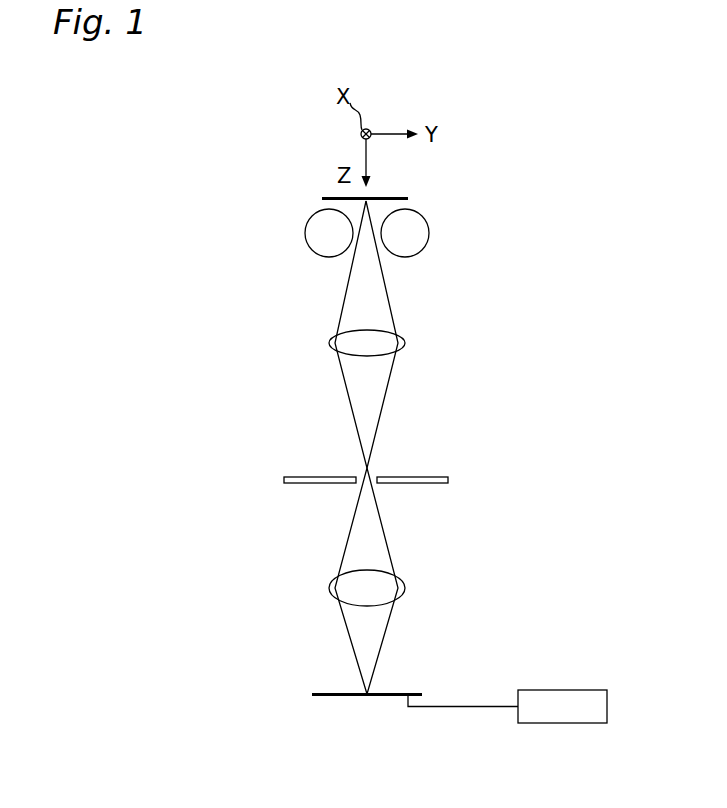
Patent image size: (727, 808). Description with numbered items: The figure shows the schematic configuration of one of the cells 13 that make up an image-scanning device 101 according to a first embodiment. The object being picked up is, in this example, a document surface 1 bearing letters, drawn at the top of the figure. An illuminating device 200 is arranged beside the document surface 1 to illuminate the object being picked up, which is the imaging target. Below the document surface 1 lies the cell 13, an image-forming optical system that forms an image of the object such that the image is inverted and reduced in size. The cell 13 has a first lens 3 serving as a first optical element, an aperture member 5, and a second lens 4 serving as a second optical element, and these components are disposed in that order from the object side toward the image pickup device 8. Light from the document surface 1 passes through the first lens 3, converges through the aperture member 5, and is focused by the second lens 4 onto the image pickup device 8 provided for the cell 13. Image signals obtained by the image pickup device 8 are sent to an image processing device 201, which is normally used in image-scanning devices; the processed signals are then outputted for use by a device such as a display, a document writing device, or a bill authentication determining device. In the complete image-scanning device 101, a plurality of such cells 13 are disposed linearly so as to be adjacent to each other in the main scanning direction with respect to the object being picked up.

The document surface 1 is at (408, 198).
The illuminating device 200 is at (428, 230).
The first lens 3 is at (404, 343).
The image-scanning device 101 is at (540, 358).
The aperture member 5 is at (448, 477).
The cell 13 is at (301, 445).
The second lens 4 is at (404, 588).
The image pickup device 8 is at (400, 694).
The image processing device 201 is at (570, 690).